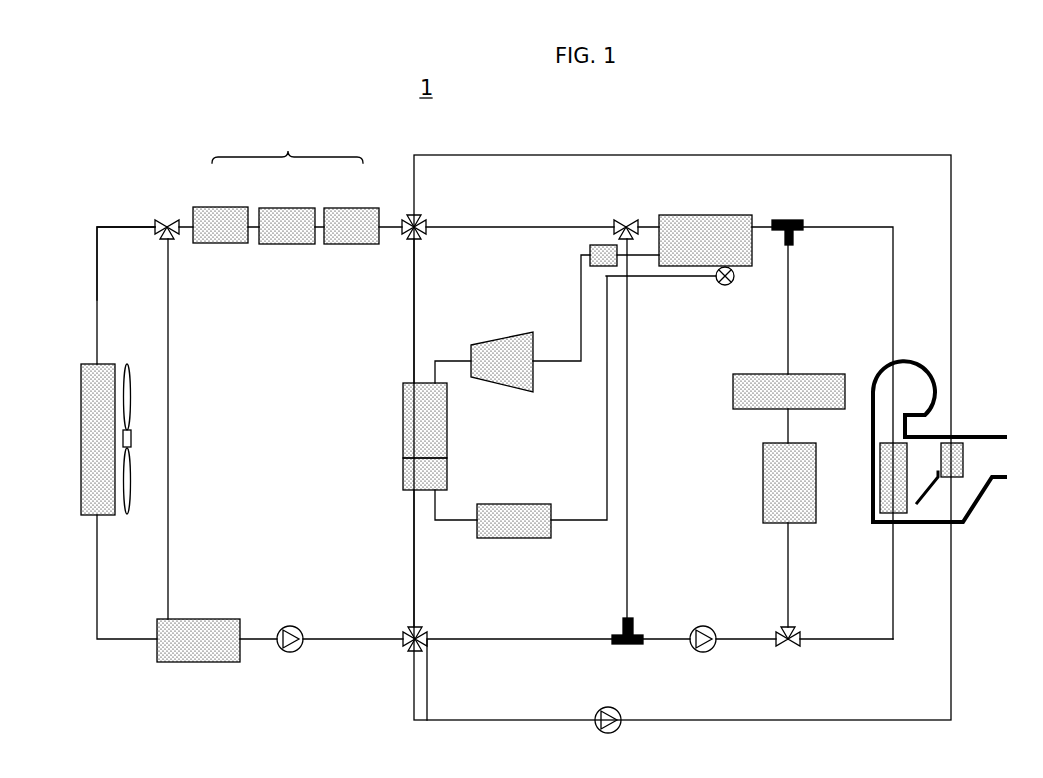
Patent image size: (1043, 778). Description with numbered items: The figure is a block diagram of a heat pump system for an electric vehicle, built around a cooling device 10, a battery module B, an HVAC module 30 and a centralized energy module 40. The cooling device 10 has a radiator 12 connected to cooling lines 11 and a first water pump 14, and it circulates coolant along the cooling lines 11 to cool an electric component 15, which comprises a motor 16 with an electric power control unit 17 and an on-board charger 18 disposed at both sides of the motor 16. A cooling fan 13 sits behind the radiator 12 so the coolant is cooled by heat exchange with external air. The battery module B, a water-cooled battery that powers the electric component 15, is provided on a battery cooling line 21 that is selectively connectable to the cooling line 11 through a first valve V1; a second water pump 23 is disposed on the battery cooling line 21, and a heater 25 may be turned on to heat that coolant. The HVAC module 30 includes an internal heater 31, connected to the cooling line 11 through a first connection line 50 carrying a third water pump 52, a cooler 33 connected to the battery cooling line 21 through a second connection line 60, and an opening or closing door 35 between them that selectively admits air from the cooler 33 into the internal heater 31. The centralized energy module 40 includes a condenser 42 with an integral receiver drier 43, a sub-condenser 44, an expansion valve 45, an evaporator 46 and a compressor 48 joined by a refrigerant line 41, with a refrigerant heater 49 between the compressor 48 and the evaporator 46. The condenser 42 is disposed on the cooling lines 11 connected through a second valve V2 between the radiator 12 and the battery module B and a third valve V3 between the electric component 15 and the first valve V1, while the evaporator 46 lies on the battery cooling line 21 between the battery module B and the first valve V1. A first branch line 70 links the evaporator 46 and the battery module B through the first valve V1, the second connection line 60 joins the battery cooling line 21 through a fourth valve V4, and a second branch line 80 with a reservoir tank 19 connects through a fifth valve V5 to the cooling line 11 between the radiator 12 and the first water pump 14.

The cooling device 10 is at (116, 204).
The cooling line 11 is at (96, 284).
The radiator 12 is at (80, 437).
The cooling fan 13 is at (132, 504).
The first water pump 14 is at (290, 653).
The electric component 15 is at (286, 184).
The motor 16 is at (287, 208).
The electric power control unit (EPCU) 17 is at (352, 208).
The on-board charger (OBC) 18 is at (219, 207).
The reservoir tank 19 is at (200, 663).
The battery cooling line 21 is at (770, 221).
The second water pump 23 is at (708, 626).
The heater 25 is at (812, 373).
The HVAC module 30 is at (979, 418).
The internal heater 31 is at (958, 490).
The cooler 33 is at (908, 511).
The opening or closing door 35 is at (937, 490).
The centralized energy (CE) module 40 is at (562, 551).
The refrigerant line 41 is at (445, 360).
The condenser 42 is at (448, 430).
The receiver drier 43 is at (448, 472).
The sub-condenser 44 is at (510, 540).
The expansion valve 45 is at (726, 286).
The evaporator 46 is at (706, 215).
The compressor 48 is at (500, 341).
The refrigerant heater 49 is at (590, 251).
The first connection line 50 is at (813, 154).
The third water pump 52 is at (600, 707).
The second connection line 60 is at (843, 225).
The first branch line 70 is at (628, 440).
The second branch line 80 is at (170, 437).
The battery module B is at (762, 480).
The first valve V1 is at (624, 215).
The second valve V2 is at (428, 643).
The third valve V3 is at (427, 232).
The fourth valve V4 is at (788, 651).
The fifth valve V5 is at (167, 215).